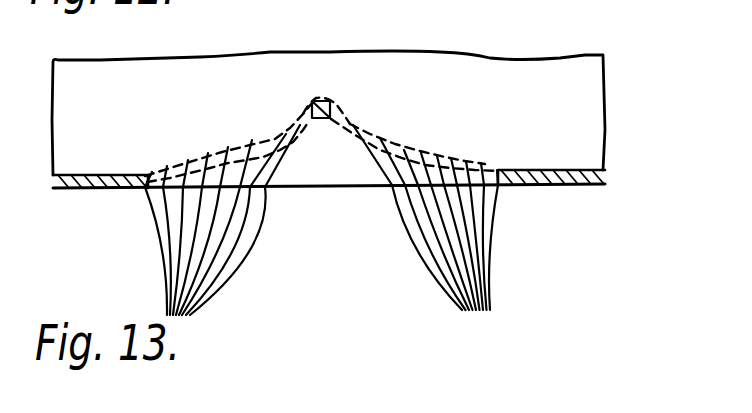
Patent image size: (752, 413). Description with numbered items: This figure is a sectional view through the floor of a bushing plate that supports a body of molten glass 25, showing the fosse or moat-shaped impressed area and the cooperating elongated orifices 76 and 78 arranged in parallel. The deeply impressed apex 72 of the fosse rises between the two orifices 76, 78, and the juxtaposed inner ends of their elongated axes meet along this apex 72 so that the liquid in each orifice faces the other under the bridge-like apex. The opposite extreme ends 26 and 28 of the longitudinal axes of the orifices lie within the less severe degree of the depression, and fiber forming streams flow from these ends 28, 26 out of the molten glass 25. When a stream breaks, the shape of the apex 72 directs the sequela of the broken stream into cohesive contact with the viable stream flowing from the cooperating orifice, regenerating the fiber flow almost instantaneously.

The body of molten glass 25 is at (565, 112).
The extreme end of the longitudinal axis of an orifice 26 is at (488, 182).
The extreme end of the longitudinal axis of an orifice 28 is at (155, 182).
The deeply impressed apex 72 is at (329, 104).
The elongated orifice 76 is at (213, 153).
The elongated orifice 78 is at (387, 146).